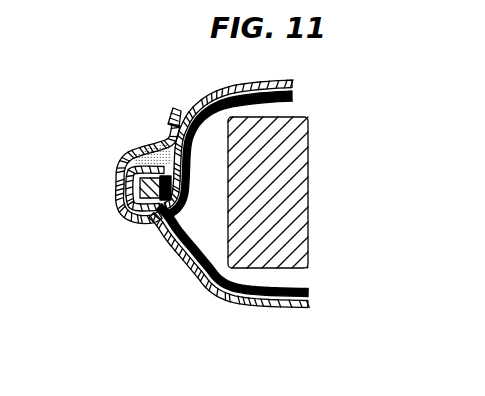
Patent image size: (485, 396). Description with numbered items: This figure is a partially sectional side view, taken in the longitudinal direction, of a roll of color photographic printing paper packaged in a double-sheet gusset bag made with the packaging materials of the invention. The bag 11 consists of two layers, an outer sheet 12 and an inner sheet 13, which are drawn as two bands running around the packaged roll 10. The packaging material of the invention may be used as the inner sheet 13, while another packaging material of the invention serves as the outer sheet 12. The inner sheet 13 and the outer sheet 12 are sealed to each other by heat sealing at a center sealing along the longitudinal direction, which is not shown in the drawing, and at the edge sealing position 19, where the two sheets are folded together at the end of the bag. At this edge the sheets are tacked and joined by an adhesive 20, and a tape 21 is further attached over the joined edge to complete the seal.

The glass panel 10 is at (300, 197).
The bag 11 is at (300, 89).
The outer sheet 12 is at (306, 308).
The inner sheet 13 is at (288, 288).
The edge sealing position 19 is at (120, 197).
The adhesive 20 is at (153, 158).
The tape 21 is at (122, 157).